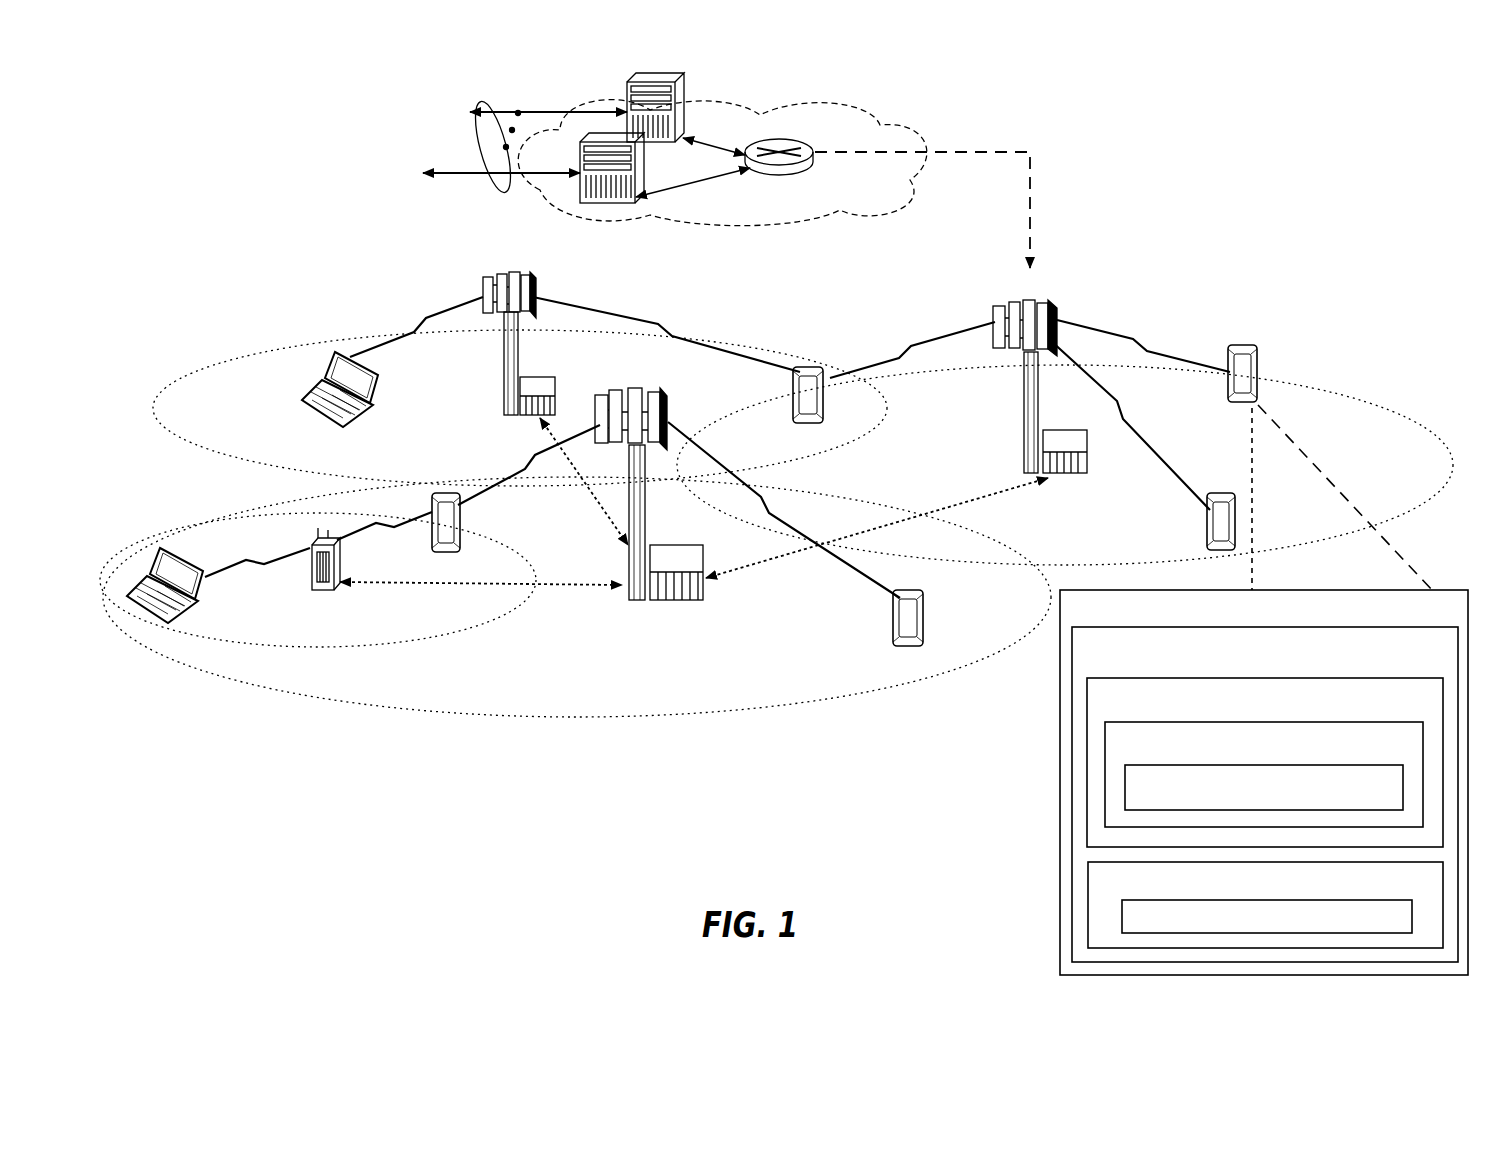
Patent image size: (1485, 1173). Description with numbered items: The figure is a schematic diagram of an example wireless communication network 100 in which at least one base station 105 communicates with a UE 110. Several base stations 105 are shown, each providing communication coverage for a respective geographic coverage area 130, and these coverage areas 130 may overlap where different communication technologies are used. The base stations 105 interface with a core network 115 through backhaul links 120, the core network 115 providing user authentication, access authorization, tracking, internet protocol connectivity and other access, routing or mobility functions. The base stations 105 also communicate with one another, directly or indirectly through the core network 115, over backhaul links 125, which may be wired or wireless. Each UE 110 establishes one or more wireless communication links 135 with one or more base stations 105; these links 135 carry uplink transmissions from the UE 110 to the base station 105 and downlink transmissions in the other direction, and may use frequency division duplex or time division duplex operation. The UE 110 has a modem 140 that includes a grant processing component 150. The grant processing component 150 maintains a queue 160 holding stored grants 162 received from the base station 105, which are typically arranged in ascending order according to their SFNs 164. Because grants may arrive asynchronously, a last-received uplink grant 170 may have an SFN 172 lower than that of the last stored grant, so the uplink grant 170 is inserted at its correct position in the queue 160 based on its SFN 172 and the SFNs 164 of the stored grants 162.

The wireless communication network 100 is at (160, 112).
The base station 105 is at (505, 382).
The user equipment 110 is at (358, 420).
The core network 115 is at (832, 237).
The backhaul link 120 is at (483, 190).
The backhaul link 125 is at (945, 505).
The geographic coverage area 130 is at (215, 465).
The wireless communication link 135 is at (425, 318).
The modem 140 is at (1264, 782).
The grant processing component 150 is at (1265, 794).
The queue 160 is at (1265, 762).
The stored grants 162 is at (1264, 774).
The SFNs 164 is at (1264, 787).
The uplink grant 170 is at (1265, 905).
The SFN 172 is at (1267, 916).